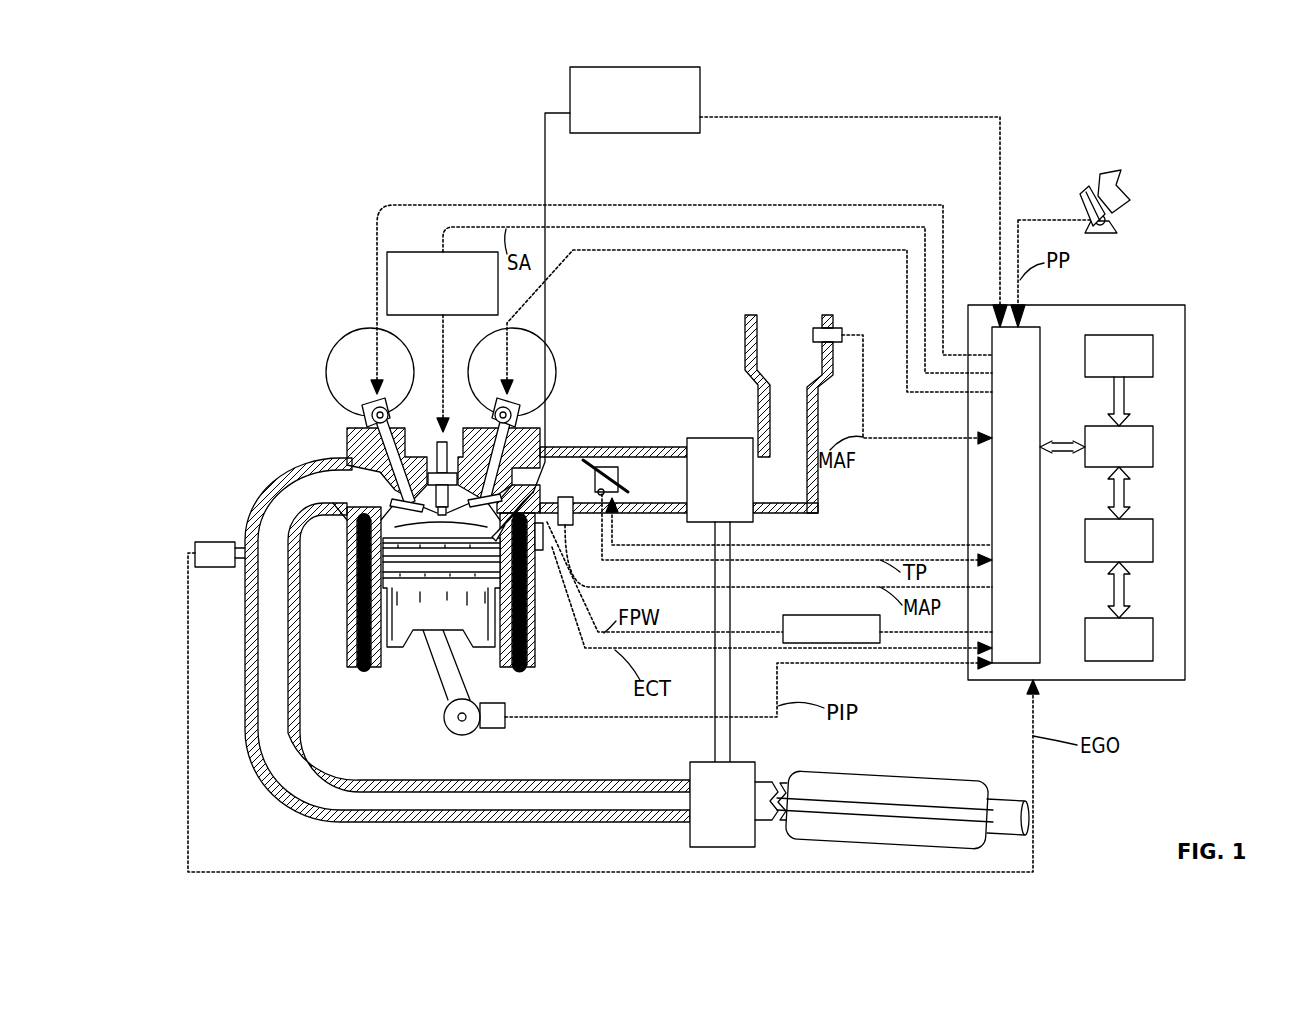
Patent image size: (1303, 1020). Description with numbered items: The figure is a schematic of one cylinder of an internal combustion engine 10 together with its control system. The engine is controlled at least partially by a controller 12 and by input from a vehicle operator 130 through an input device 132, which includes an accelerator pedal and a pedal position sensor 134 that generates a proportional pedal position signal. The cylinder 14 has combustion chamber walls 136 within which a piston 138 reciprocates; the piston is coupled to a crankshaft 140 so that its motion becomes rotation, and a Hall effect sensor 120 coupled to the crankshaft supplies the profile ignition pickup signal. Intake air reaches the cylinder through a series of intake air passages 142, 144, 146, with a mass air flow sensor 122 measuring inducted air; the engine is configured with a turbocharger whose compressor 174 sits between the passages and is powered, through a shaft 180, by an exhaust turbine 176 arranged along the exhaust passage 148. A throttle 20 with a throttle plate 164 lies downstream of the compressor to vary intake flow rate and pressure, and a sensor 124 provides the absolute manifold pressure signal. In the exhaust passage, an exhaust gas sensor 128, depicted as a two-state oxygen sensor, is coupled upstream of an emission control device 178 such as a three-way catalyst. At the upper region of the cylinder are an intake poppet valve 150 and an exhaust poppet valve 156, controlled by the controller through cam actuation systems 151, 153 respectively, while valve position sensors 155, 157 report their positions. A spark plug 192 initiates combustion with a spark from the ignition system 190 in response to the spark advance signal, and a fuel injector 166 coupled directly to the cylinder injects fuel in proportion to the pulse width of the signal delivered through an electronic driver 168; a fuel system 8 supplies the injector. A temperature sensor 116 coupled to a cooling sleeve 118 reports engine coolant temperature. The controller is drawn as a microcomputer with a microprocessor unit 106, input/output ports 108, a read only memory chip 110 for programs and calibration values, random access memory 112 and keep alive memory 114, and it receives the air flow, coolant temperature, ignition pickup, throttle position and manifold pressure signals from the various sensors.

The internal combustion engine 10 is at (178, 140).
The fuel system 8 is at (700, 86).
The ignition system 190 is at (399, 252).
The controller 12 is at (1184, 308).
The input/output ports 108 is at (1043, 330).
The read only memory chip 110 is at (1153, 352).
The microprocessor unit 106 is at (1153, 447).
The random access memory 112 is at (1153, 547).
The keep alive memory 114 is at (1153, 642).
The vehicle operator 130 is at (1132, 190).
The input device 132 is at (1082, 198).
The pedal position sensor 134 is at (1112, 221).
The mass air flow sensor 122 is at (838, 328).
The intake air passage 142 is at (808, 359).
The intake air passage 144 is at (679, 490).
The intake air passage 146 is at (579, 490).
The compressor 174 is at (700, 438).
The throttle 20 is at (608, 467).
The throttle plate 164 is at (565, 497).
The sensor 124 is at (569, 531).
The exhaust passage 148 is at (333, 498).
The cylinder 14 is at (345, 556).
The exhaust gas sensor 128 is at (195, 550).
The exhaust poppet valve 156 is at (355, 460).
The combustion chamber walls 136 is at (382, 667).
The cooling sleeve 118 is at (527, 667).
The intake poppet valve 150 is at (450, 500).
The piston 138 is at (424, 650).
The crankshaft 140 is at (453, 735).
The Hall effect sensor 120 is at (496, 729).
The temperature sensor 116 is at (546, 553).
The fuel injector 166 is at (520, 500).
The electronic driver 168 is at (783, 618).
The spark plug 192 is at (438, 442).
The cam actuation system 153 is at (384, 395).
The valve position sensor 155 is at (548, 410).
The valve position sensor 157 is at (367, 410).
The cam actuation system 151 is at (495, 398).
The shaft 180 is at (731, 736).
The exhaust turbine 176 is at (690, 840).
The emission control device 178 is at (950, 773).